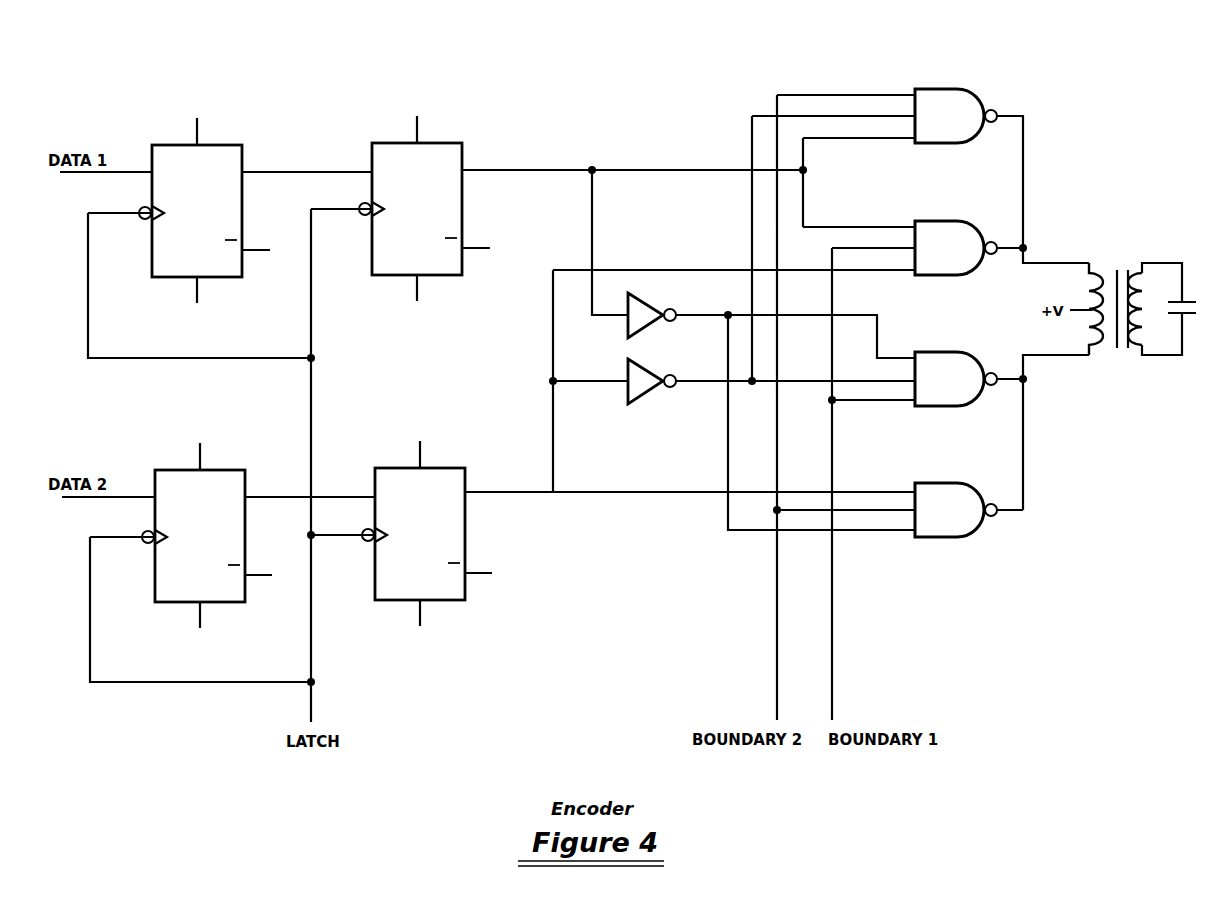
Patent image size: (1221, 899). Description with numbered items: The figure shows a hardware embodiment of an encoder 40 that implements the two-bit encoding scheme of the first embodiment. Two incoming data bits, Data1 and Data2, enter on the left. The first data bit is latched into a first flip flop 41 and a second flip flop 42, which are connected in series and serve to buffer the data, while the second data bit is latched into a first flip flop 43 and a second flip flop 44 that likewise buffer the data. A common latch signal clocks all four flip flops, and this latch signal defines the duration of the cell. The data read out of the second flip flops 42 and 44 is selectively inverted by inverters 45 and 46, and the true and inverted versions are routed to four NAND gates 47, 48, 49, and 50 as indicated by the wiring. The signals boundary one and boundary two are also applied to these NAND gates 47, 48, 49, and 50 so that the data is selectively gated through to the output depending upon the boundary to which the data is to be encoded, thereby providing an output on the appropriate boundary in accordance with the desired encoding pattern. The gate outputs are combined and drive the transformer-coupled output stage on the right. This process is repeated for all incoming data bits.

The encoder 40 is at (468, 92).
The first flip flop 41 is at (177, 143).
The second flip flop 42 is at (392, 141).
The first flip flop 43 is at (177, 468).
The second flip flop 44 is at (397, 466).
The inverter 45 is at (650, 306).
The inverter 46 is at (650, 372).
The NAND gate 47 is at (928, 88).
The NAND gate 48 is at (928, 220).
The NAND gate 49 is at (928, 351).
The NAND gate 50 is at (930, 482).